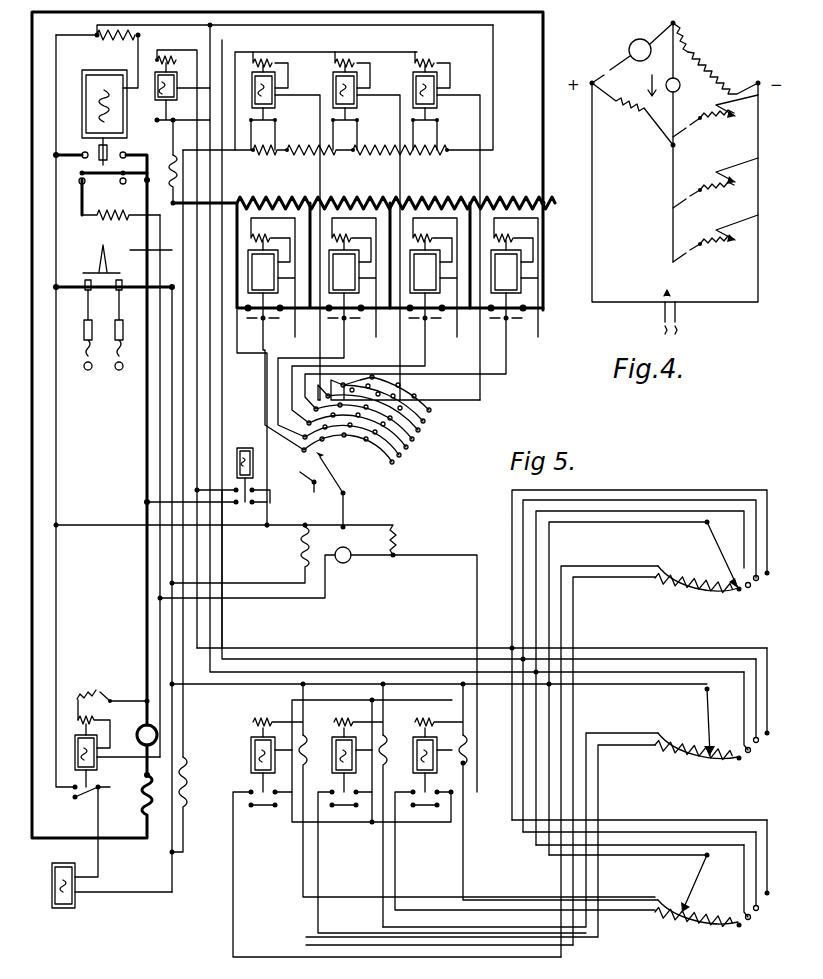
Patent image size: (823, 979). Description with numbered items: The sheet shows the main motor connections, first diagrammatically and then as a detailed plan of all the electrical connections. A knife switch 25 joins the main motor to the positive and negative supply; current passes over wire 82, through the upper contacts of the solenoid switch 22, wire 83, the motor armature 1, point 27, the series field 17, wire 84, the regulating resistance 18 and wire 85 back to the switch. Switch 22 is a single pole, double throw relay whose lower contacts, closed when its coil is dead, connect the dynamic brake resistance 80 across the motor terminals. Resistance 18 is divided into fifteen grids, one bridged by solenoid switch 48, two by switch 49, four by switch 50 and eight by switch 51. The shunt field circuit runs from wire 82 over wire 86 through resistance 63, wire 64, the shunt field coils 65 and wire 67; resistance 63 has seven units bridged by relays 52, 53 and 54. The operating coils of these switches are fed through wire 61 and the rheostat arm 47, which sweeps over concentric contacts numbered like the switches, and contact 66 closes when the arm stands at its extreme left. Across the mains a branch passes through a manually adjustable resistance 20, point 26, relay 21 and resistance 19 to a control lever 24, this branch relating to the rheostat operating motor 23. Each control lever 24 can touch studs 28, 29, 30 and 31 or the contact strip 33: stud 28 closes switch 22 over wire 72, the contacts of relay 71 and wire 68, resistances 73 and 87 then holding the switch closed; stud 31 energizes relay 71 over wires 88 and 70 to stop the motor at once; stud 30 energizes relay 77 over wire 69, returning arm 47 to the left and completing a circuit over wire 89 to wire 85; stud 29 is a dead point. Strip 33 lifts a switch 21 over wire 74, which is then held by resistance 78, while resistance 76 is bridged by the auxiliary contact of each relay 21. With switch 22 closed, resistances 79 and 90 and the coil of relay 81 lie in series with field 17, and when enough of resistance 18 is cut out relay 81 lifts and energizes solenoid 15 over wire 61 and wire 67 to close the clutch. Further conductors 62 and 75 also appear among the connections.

In FIG. 4, the motor armature 1 is at (628, 47).
In FIG. 5, the motor armature 1 is at (140, 715).
In FIG. 5, the solenoid 15 is at (52, 886).
In FIG. 4, the motor series field 17 is at (689, 30).
In FIG. 5, the motor series field 17 is at (142, 798).
In FIG. 4, the resistance 18 is at (722, 56).
In FIG. 5, the resistance 18 is at (444, 192).
In FIG. 4, the resistance 19 is at (730, 250).
In FIG. 5, the resistance 19 is at (668, 596).
In FIG. 4, the manually adjustable resistance 20 is at (624, 114).
In FIG. 5, the manually adjustable resistance 20 is at (398, 540).
In FIG. 4, the control relay 21 is at (688, 258).
In FIG. 5, the control relay 21 is at (251, 757).
In FIG. 4, the solenoid switch 22 is at (606, 74).
In FIG. 5, the solenoid switch 22 is at (88, 72).
In FIG. 4, the rheostat operating motor 23 is at (681, 85).
In FIG. 5, the rheostat operating motor 23 is at (346, 563).
In FIG. 4, the control lever 24 is at (758, 217).
In FIG. 5, the control lever 24 is at (712, 540).
In FIG. 4, the knife switch 25 is at (660, 318).
In FIG. 5, the knife switch 25 is at (84, 292).
In FIG. 4, the point 26 is at (670, 146).
In FIG. 5, the point 26 is at (396, 560).
In FIG. 4, the point 27 is at (662, 15).
In FIG. 5, the point 27 is at (144, 775).
In FIG. 5, the stud 28 is at (740, 592).
In FIG. 5, the stud 29 is at (752, 588).
In FIG. 5, the stud 30 is at (760, 580).
In FIG. 5, the stud 31 is at (770, 576).
In FIG. 5, the contact strip 33 is at (702, 584).
In FIG. 5, the rheostat arm 47 is at (347, 478).
In FIG. 5, the solenoid switch 48 is at (392, 462).
In FIG. 5, the solenoid switch 49 is at (399, 455).
In FIG. 5, the solenoid switch 50 is at (406, 447).
In FIG. 5, the solenoid switch 51 is at (412, 439).
In FIG. 5, the relay 52 is at (284, 80).
In FIG. 5, the relay 53 is at (366, 80).
In FIG. 5, the relay 54 is at (444, 80).
In FIG. 5, the wire 61 is at (56, 462).
In FIG. 5, the conductor 62 is at (160, 426).
In FIG. 5, the resistance 63 is at (372, 154).
In FIG. 5, the wire 64 is at (183, 402).
In FIG. 5, the shunt field coils 65 is at (187, 790).
In FIG. 5, the contact 66 is at (295, 480).
In FIG. 5, the wire 67 is at (172, 448).
In FIG. 5, the wire 68 is at (210, 130).
In FIG. 5, the wire 69 is at (612, 500).
In FIG. 5, the wire 70 is at (197, 465).
In FIG. 5, the relay 71 is at (155, 88).
In FIG. 5, the wire 72 is at (226, 48).
In FIG. 5, the resistance 73 is at (128, 40).
In FIG. 5, the wire 74 is at (562, 596).
In FIG. 5, the conductor 75 is at (574, 610).
In FIG. 5, the resistance 76 is at (256, 706).
In FIG. 5, the relay 77 is at (252, 446).
In FIG. 5, the resistance 78 is at (300, 766).
In FIG. 5, the resistance 79 is at (100, 688).
In FIG. 5, the dynamic brake resistance 80 is at (114, 212).
In FIG. 5, the relay 81 is at (75, 755).
In FIG. 5, the wire 82 is at (56, 232).
In FIG. 5, the wire 83 is at (147, 235).
In FIG. 5, the wire 84 is at (32, 717).
In FIG. 5, the wire 85 is at (145, 250).
In FIG. 5, the wire 86 is at (478, 30).
In FIG. 5, the resistance 87 is at (166, 160).
In FIG. 5, the wire 88 is at (212, 84).
In FIG. 5, the wire 89 is at (258, 369).
In FIG. 5, the resistance 90 is at (84, 731).